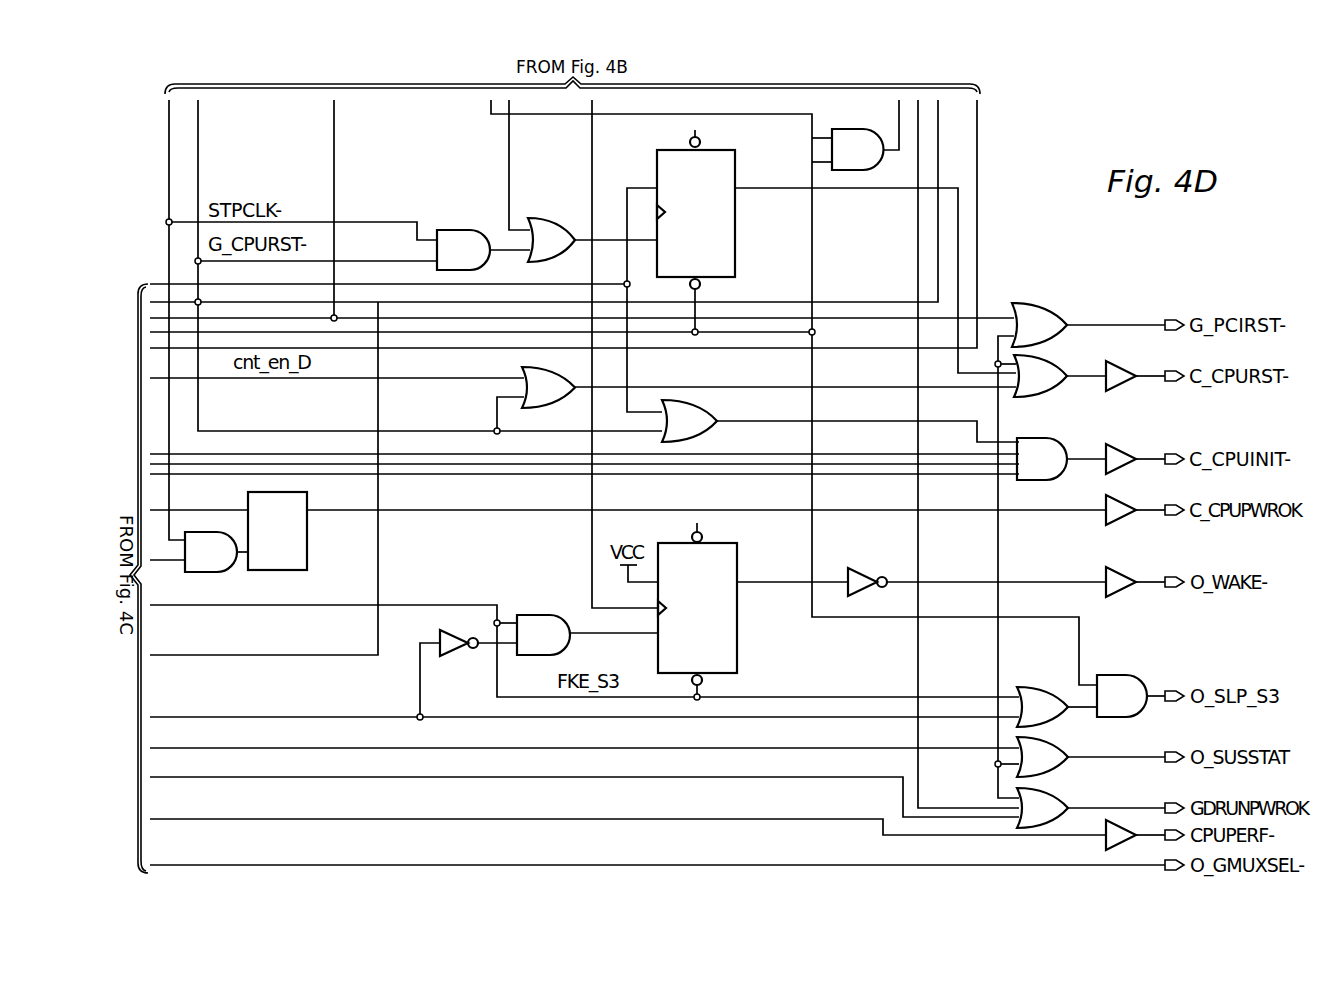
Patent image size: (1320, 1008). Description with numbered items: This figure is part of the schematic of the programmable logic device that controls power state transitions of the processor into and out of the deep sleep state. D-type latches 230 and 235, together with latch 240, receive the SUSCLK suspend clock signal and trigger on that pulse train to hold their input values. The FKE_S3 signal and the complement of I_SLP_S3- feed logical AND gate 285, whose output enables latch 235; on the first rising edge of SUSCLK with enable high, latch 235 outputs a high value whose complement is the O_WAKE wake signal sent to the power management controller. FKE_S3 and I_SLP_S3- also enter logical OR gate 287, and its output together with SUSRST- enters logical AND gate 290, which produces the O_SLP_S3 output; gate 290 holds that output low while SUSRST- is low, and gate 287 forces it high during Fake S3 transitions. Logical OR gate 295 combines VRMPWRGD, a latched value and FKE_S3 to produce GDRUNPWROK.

The latch 230 is at (735, 222).
The latch 235 is at (737, 620).
The latch 240 is at (307, 535).
The logical AND gate 285 is at (537, 616).
The logical OR gate 287 is at (1040, 687).
The logical AND gate 290 is at (1122, 675).
The logical OR gate 295 is at (1085, 790).